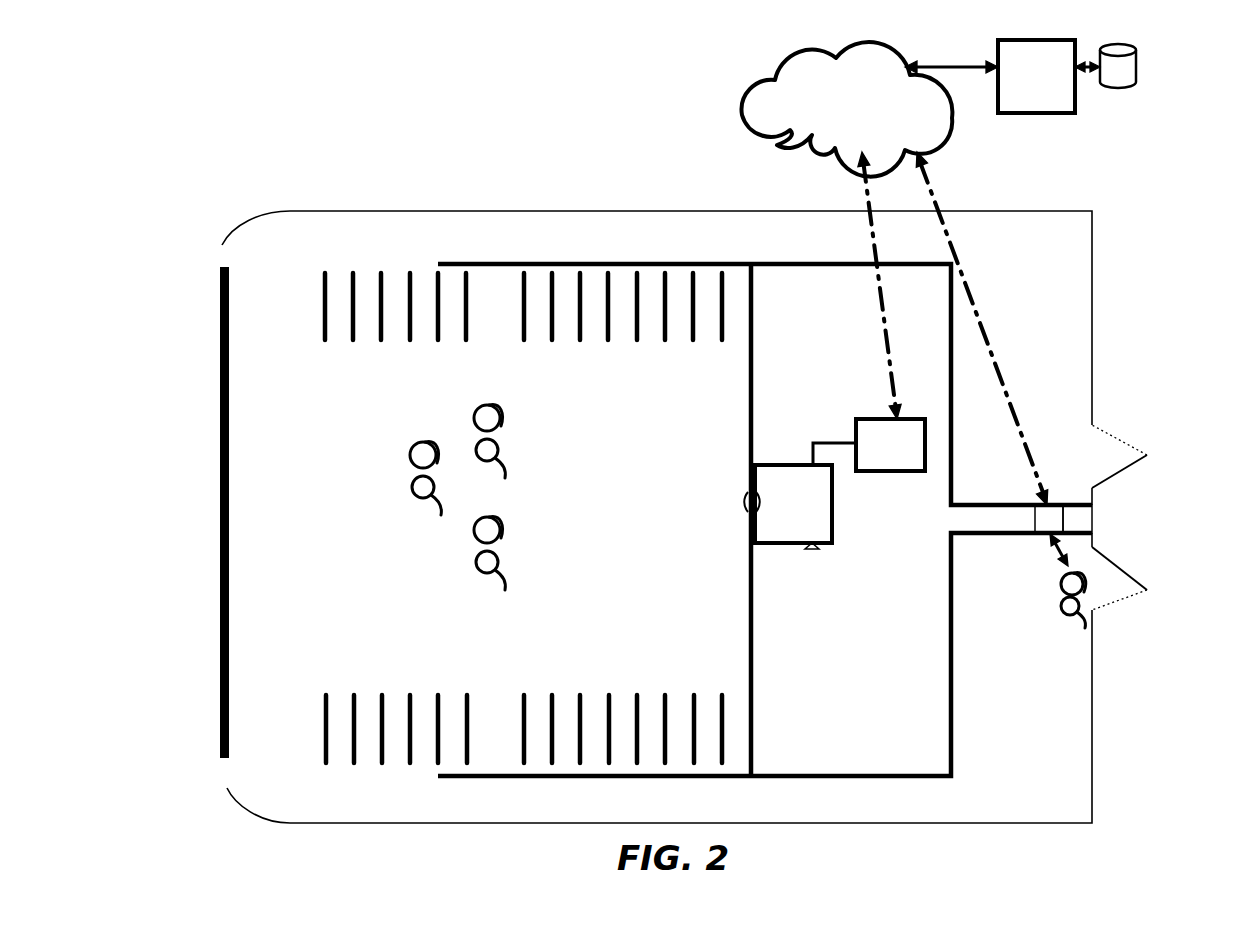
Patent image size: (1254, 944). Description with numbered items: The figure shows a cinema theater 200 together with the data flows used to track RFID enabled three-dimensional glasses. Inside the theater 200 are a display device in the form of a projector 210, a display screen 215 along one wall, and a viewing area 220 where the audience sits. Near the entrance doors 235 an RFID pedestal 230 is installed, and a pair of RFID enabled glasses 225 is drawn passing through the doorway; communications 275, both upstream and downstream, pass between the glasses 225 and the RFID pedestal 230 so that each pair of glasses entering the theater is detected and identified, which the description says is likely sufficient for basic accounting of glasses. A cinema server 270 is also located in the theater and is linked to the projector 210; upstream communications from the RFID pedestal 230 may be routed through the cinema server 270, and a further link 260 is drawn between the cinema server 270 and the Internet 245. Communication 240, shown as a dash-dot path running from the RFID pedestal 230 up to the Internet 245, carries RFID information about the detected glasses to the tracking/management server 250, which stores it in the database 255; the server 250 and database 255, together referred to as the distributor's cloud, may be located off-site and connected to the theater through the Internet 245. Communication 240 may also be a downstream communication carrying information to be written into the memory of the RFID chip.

The cinema theater 200 is at (432, 158).
The projector 210 is at (800, 496).
The display screen 215 is at (212, 438).
The viewing area 220 is at (500, 497).
The RFID enabled 3D glasses 225 is at (1050, 608).
The RFID pedestal 230 is at (1026, 522).
The entrance doors 235 is at (1122, 485).
The communication to the server 240 is at (988, 316).
The Internet 245 is at (847, 109).
The tracking/management server 250 is at (1002, 76).
The database 255 is at (1118, 98).
The communication link 260 is at (875, 325).
The cinema server 270 is at (890, 445).
The communications 275 is at (1046, 560).